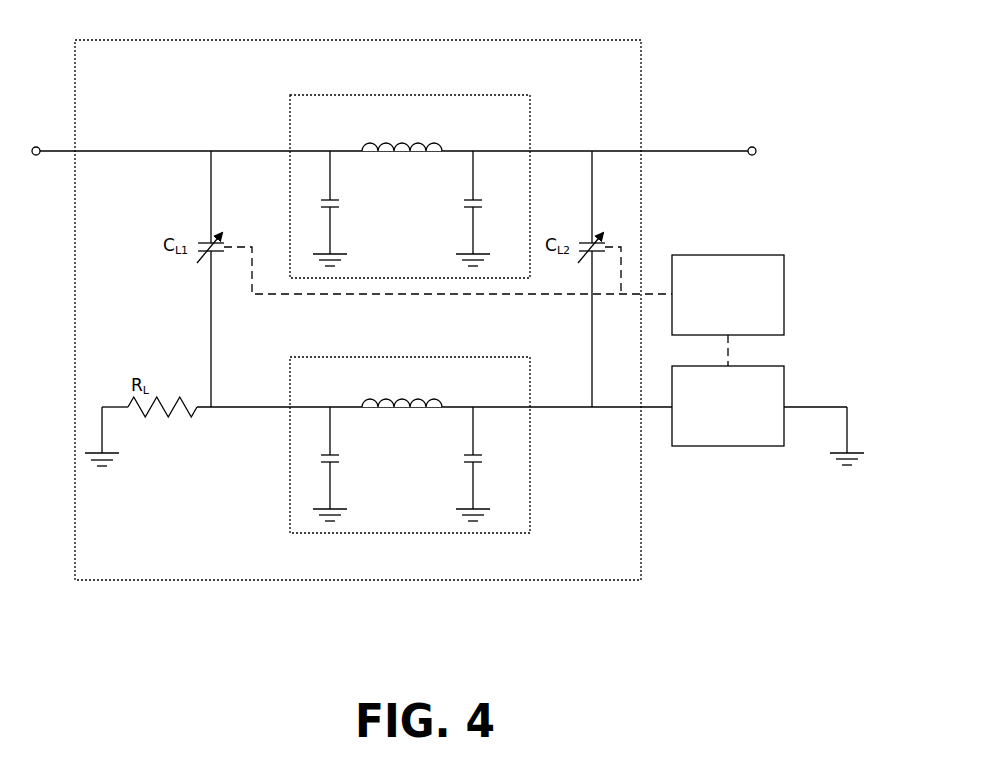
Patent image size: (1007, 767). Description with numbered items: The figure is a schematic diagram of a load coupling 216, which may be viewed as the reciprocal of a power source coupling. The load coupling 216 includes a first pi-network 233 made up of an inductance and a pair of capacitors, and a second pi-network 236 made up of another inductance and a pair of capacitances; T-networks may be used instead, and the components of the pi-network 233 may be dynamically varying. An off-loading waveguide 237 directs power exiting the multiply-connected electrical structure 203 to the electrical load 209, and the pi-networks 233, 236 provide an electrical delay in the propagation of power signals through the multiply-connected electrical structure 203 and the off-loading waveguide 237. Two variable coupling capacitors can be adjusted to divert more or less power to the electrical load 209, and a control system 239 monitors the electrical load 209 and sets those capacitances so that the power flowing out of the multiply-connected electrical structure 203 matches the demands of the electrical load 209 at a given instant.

The multiply-connected electrical structure 203 is at (55, 151).
The load coupling 216 is at (641, 517).
The pi-network 233 is at (439, 95).
The pi-network 236 is at (425, 533).
The off-loading waveguide 237 is at (246, 458).
The control system 239 is at (728, 295).
The electrical load 209 is at (768, 415).